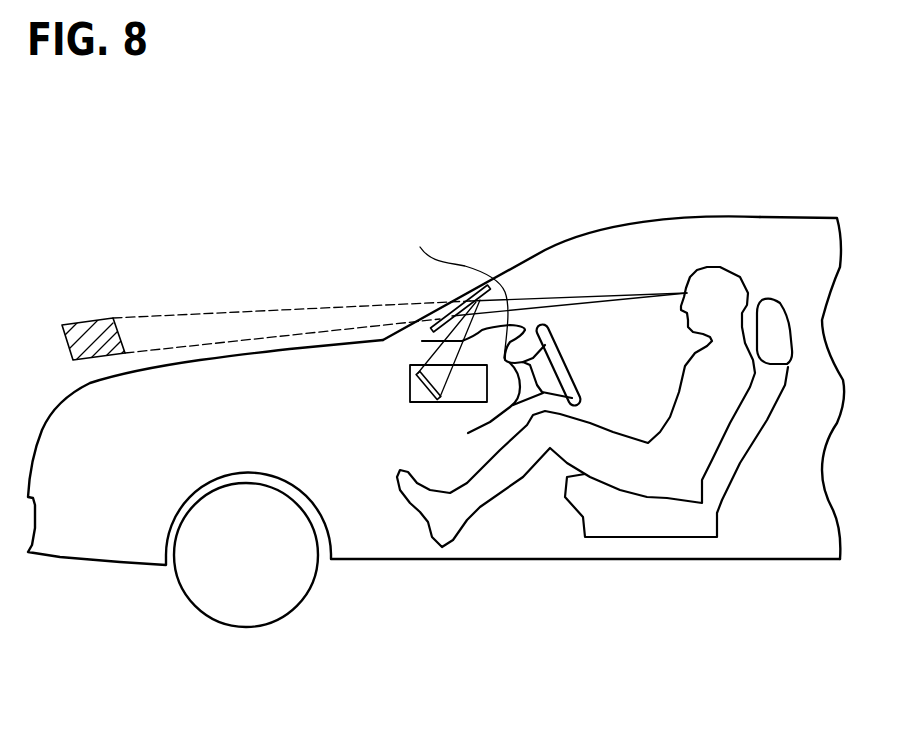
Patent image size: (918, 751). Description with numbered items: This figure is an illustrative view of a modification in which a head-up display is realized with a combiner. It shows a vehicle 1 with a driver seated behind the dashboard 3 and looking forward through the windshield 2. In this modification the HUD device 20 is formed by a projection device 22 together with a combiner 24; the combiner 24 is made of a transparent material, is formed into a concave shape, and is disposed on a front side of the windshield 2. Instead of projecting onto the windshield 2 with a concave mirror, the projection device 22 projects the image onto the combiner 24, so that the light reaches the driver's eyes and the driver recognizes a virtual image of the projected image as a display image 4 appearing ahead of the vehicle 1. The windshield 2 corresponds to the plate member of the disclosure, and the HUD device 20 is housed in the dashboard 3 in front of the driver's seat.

The vehicle 1 is at (294, 190).
The windshield 2 is at (530, 258).
The dashboard 3 is at (546, 308).
The display image 4 is at (77, 323).
The HUD device 20 is at (328, 391).
The projection device 22 is at (409, 390).
The combiner 24 is at (420, 322).